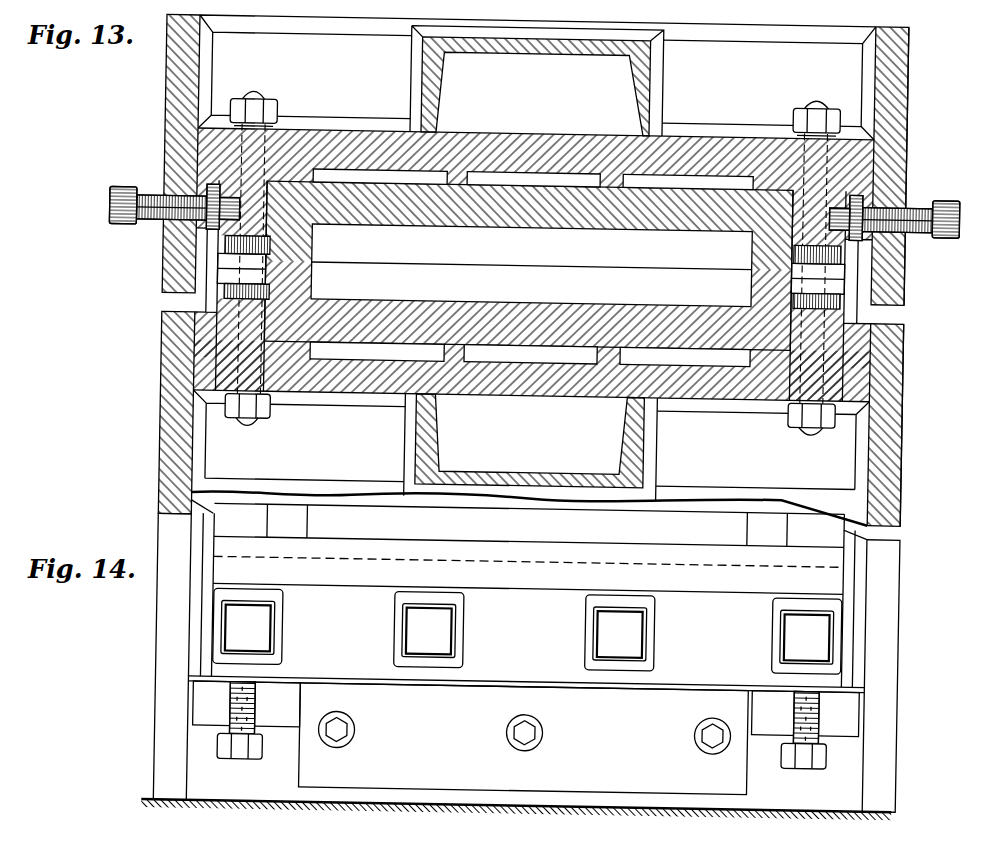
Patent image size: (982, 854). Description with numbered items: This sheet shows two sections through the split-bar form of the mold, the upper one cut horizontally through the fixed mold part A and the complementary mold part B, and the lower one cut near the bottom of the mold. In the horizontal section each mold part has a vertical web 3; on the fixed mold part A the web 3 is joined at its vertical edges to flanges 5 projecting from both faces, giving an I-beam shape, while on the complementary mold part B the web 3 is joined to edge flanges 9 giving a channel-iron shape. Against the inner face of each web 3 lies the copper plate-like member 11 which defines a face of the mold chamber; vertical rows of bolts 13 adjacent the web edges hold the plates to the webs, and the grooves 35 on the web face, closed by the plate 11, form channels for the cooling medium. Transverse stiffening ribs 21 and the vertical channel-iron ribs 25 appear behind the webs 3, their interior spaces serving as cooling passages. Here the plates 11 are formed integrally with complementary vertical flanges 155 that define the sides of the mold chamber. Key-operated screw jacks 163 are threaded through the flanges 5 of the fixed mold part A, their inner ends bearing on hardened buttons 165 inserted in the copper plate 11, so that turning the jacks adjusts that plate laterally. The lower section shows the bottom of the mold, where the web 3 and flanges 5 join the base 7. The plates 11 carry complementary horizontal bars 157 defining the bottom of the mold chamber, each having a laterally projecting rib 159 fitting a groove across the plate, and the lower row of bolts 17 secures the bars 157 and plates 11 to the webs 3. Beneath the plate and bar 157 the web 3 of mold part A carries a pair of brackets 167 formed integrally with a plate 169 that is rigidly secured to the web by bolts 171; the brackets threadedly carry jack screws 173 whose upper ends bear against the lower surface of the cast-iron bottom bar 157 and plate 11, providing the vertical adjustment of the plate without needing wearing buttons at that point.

In FIG. 13, the web 3 is at (314, 133).
In FIG. 14, the web 3 is at (211, 748).
In FIG. 13, the flange 5 is at (173, 91).
In FIG. 14, the flange 5 is at (174, 638).
In FIG. 14, the base 7 is at (280, 796).
In FIG. 13, the edge flange 9 is at (175, 410).
In FIG. 13, the plate-like member 11 is at (542, 211).
In FIG. 13, the bolt 13 is at (265, 95).
In FIG. 14, the bolt 17 is at (268, 634).
In FIG. 13, the transverse stiffening rib 21 is at (736, 42).
In FIG. 13, the vertical rib 25 is at (661, 80).
In FIG. 13, the vertical longitudinal groove 35 is at (375, 162).
In FIG. 13, the vertical flange 155 is at (307, 239).
In FIG. 14, the vertical flange 155 is at (309, 520).
In FIG. 14, the horizontal bar 157 is at (526, 656).
In FIG. 14, the laterally projecting rib 159 is at (451, 544).
In FIG. 13, the screw jack 163 is at (125, 190).
In FIG. 13, the hardened button 165 is at (212, 225).
In FIG. 14, the bracket 167 is at (295, 712).
In FIG. 14, the plate 169 is at (741, 768).
In FIG. 14, the bolt 171 is at (359, 712).
In FIG. 14, the jack screw 173 is at (256, 746).
In FIG. 13, the fixed mold part A is at (910, 140).
In FIG. 13, the complementary mold part B is at (909, 383).